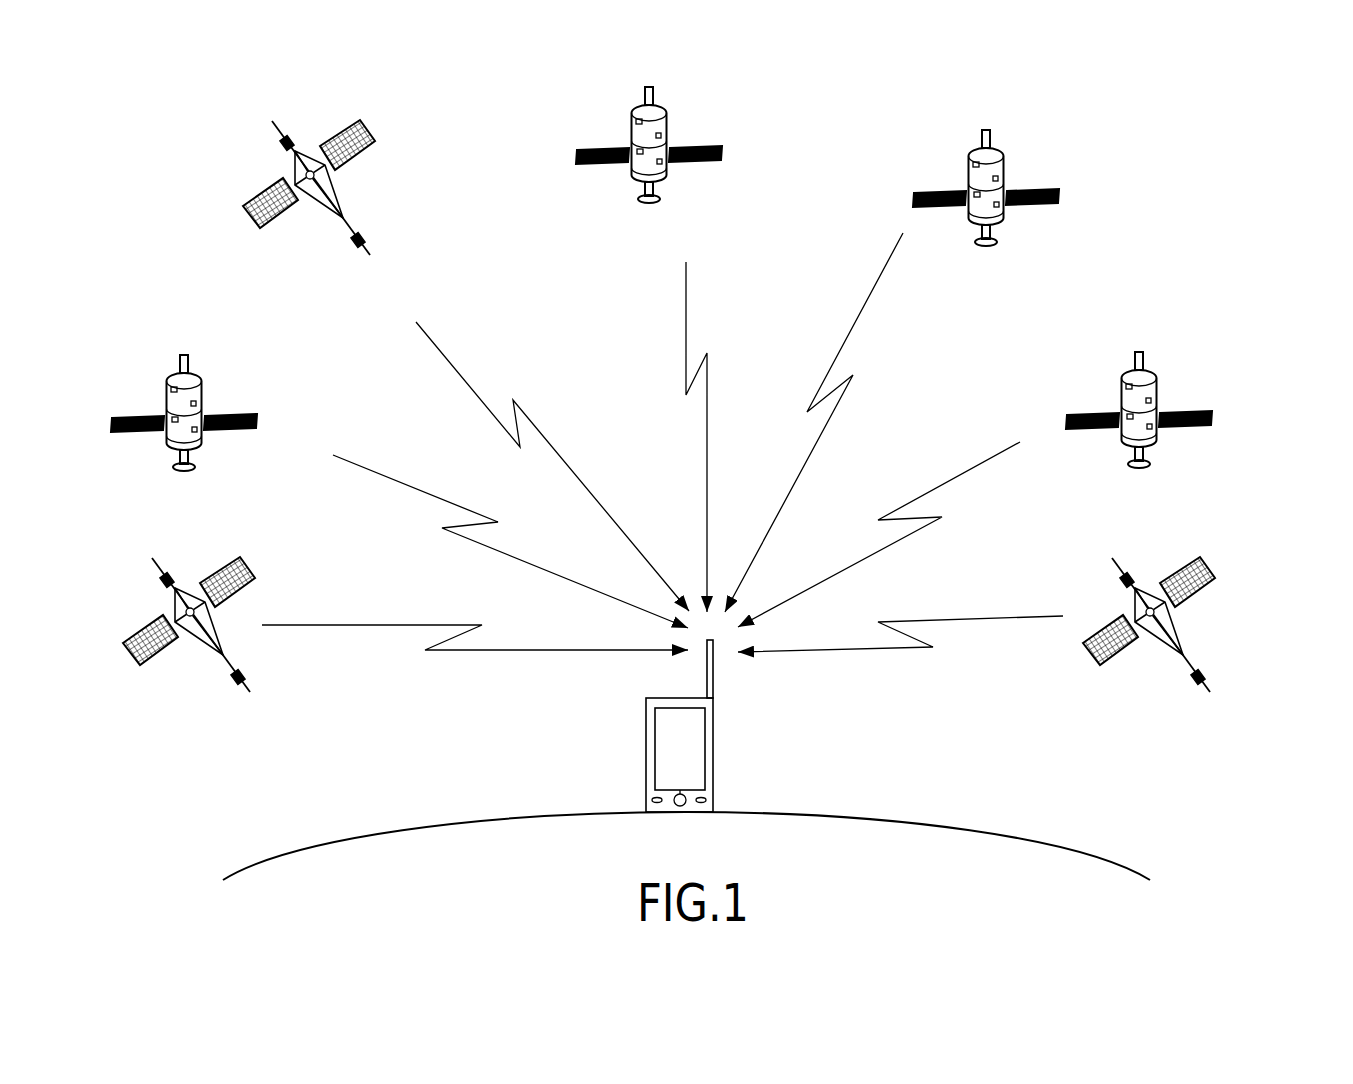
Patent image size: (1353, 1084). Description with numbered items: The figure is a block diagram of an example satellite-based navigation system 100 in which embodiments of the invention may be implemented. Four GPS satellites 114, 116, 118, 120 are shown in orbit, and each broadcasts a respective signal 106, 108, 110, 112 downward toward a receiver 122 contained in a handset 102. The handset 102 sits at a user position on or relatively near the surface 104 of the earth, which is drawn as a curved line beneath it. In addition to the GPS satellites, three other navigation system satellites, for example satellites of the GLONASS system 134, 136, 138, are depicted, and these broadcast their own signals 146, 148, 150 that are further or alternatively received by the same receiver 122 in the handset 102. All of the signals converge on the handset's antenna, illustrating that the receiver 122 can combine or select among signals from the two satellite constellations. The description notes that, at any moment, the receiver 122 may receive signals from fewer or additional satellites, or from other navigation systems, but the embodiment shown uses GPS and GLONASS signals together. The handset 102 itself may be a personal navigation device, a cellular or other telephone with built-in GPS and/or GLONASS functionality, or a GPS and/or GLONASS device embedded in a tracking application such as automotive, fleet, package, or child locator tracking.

The satellite-based navigation system 100 is at (1180, 151).
The handset 102 is at (688, 726).
The surface of earth 104 is at (925, 815).
The signal 106 is at (497, 552).
The signal 108 is at (686, 330).
The signal 110 is at (851, 328).
The signal 112 is at (957, 474).
The GPS satellite 114 is at (313, 508).
The GPS satellite 116 is at (776, 243).
The GPS satellite 118 is at (1114, 285).
The GPS satellite 120 is at (1268, 508).
The receiver 122 is at (673, 735).
The GLONASS satellite 134 is at (248, 787).
The GLONASS satellite 136 is at (367, 347).
The GLONASS satellite 138 is at (1208, 787).
The signal 146 is at (512, 652).
The signal 148 is at (455, 370).
The signal 150 is at (940, 617).